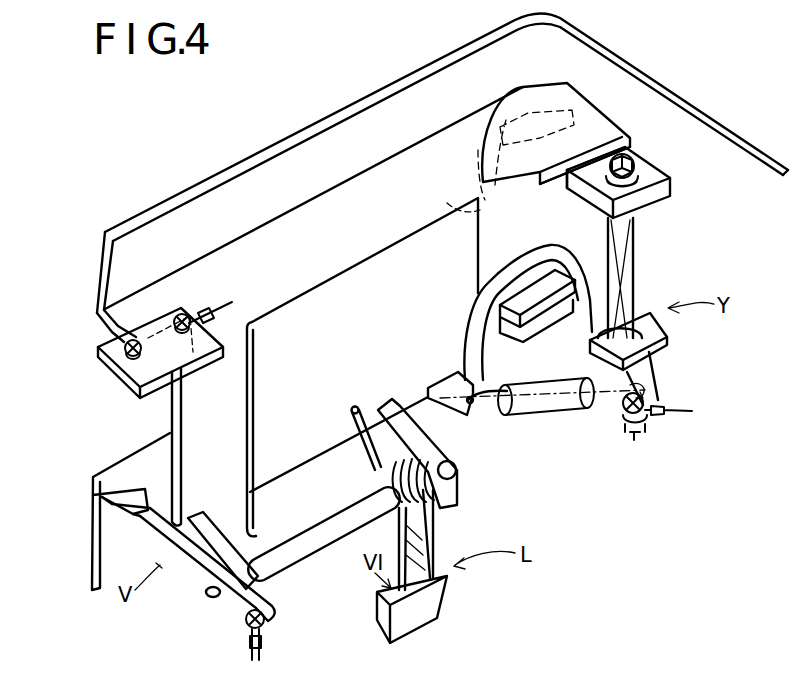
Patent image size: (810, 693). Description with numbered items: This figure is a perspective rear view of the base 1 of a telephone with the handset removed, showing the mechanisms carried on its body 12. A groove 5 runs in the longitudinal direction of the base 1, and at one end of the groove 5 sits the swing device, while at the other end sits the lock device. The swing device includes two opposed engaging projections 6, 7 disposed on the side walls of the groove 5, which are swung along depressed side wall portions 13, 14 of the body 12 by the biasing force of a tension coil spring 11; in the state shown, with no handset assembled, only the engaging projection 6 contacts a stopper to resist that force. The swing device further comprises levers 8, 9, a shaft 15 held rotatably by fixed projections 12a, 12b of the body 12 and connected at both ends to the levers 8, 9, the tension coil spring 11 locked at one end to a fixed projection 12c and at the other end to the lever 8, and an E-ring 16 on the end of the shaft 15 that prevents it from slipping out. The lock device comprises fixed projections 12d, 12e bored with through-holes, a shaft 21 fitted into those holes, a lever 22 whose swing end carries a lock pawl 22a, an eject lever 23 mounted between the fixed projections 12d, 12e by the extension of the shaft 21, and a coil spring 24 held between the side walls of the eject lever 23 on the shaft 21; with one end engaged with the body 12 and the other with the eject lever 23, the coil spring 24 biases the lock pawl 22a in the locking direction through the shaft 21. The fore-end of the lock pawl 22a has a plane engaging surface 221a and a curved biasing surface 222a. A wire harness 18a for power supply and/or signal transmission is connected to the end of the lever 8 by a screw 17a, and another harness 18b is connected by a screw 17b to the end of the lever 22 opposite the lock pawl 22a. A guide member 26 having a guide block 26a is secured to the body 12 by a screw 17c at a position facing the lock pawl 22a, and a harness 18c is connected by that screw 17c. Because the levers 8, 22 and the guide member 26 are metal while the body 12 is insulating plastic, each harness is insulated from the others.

The base 1 is at (213, 164).
The groove 5 is at (150, 440).
The engaging projection 6 is at (537, 307).
The engaging projection 7 is at (537, 148).
The lever 8 is at (573, 323).
The lever 9 is at (598, 160).
The tension coil spring 11 is at (567, 395).
The body 12 is at (720, 180).
The fixed projection 12a is at (668, 350).
The fixed projection 12b is at (686, 200).
The fixed projection 12c is at (447, 386).
The fixed projection 12d is at (222, 508).
The fixed projection 12e is at (380, 440).
The depressed side wall portion 13 is at (493, 345).
The depressed side wall portion 14 is at (460, 207).
The shaft 15 is at (640, 236).
The E-ring 16 is at (635, 172).
The screw 17a is at (650, 433).
The screw 17b is at (268, 625).
The screw 17c is at (135, 340).
The wire harness 18a is at (680, 415).
The harness 18b is at (262, 656).
The harness 18c is at (215, 300).
The shaft 21 is at (340, 528).
The lever 22 is at (192, 588).
The lock pawl 22a is at (122, 520).
The plane engaging surface 221a is at (133, 515).
The curved biasing surface 222a is at (104, 491).
The eject lever 23 is at (418, 626).
The coil spring 24 is at (432, 490).
The guide member 26 is at (160, 320).
The guide block 26a is at (165, 398).